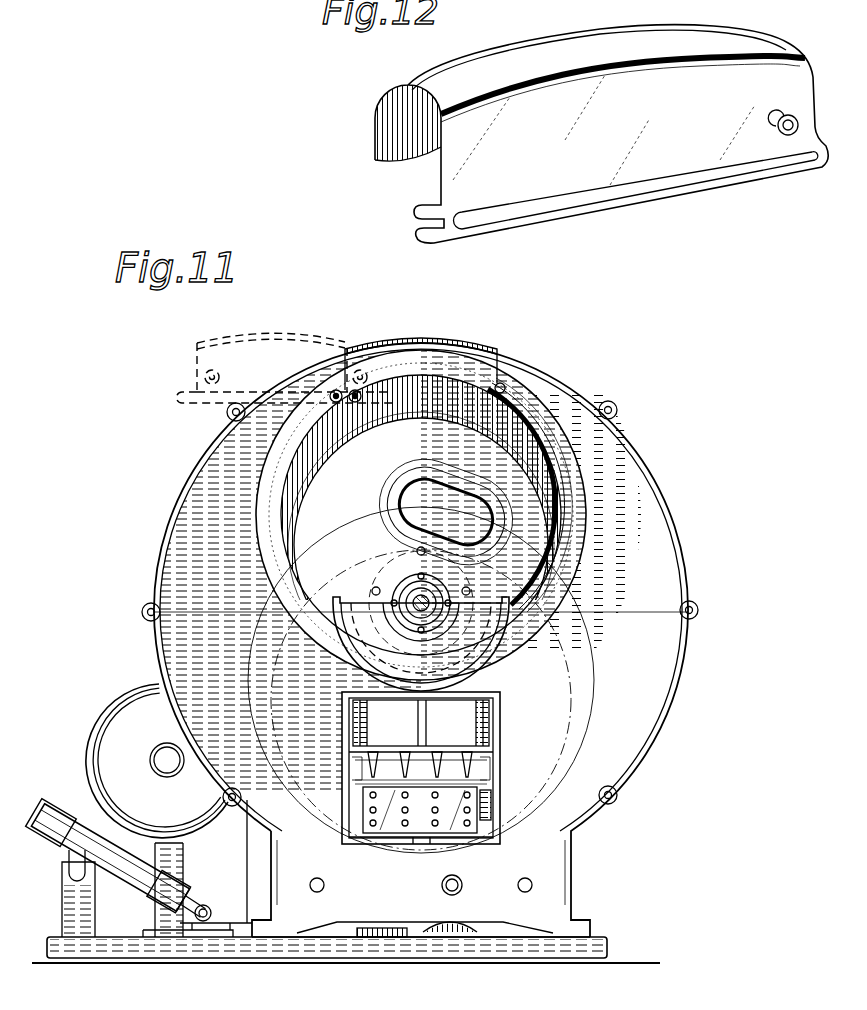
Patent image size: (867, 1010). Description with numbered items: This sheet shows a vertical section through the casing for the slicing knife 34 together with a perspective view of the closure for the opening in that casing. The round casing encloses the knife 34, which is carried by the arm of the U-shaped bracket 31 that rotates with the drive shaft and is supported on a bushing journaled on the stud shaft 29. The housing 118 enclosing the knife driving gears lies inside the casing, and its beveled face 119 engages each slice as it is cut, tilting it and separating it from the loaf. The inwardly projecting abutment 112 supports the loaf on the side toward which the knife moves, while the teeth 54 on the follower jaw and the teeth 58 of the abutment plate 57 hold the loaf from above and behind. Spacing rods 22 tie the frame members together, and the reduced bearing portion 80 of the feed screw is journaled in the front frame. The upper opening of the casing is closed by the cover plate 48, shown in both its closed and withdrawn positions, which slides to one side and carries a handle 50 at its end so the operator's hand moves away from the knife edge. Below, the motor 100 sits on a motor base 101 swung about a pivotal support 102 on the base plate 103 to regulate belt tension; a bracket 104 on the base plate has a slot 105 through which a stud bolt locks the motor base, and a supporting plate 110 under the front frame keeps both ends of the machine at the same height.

In FIG. 12, the cover plate 48 is at (576, 55).
In FIG. 11, the cover plate 48 is at (260, 343).
In FIG. 12, the handle 50 is at (793, 117).
In FIG. 11, the slicing knife 34 is at (575, 513).
In FIG. 11, the beveled face 119 is at (500, 470).
In FIG. 11, the housing 118 is at (433, 503).
In FIG. 11, the U-shaped bracket 31 is at (421, 644).
In FIG. 11, the stud shaft 29 is at (432, 617).
In FIG. 11, the abutment 112 is at (352, 779).
In FIG. 11, the teeth 54 is at (430, 752).
In FIG. 11, the abutment plate 57 is at (420, 810).
In FIG. 11, the teeth 58 is at (482, 800).
In FIG. 11, the spacing rods 22 is at (325, 885).
In FIG. 11, the reduced bearing portion 80 is at (463, 888).
In FIG. 11, the supporting plate 110 is at (580, 943).
In FIG. 11, the motor 100 is at (193, 807).
In FIG. 11, the motor base 101 is at (134, 874).
In FIG. 11, the pivotal support 102 is at (205, 908).
In FIG. 11, the base plate 103 is at (107, 948).
In FIG. 11, the bracket 104 is at (70, 905).
In FIG. 11, the slot 105 is at (69, 860).